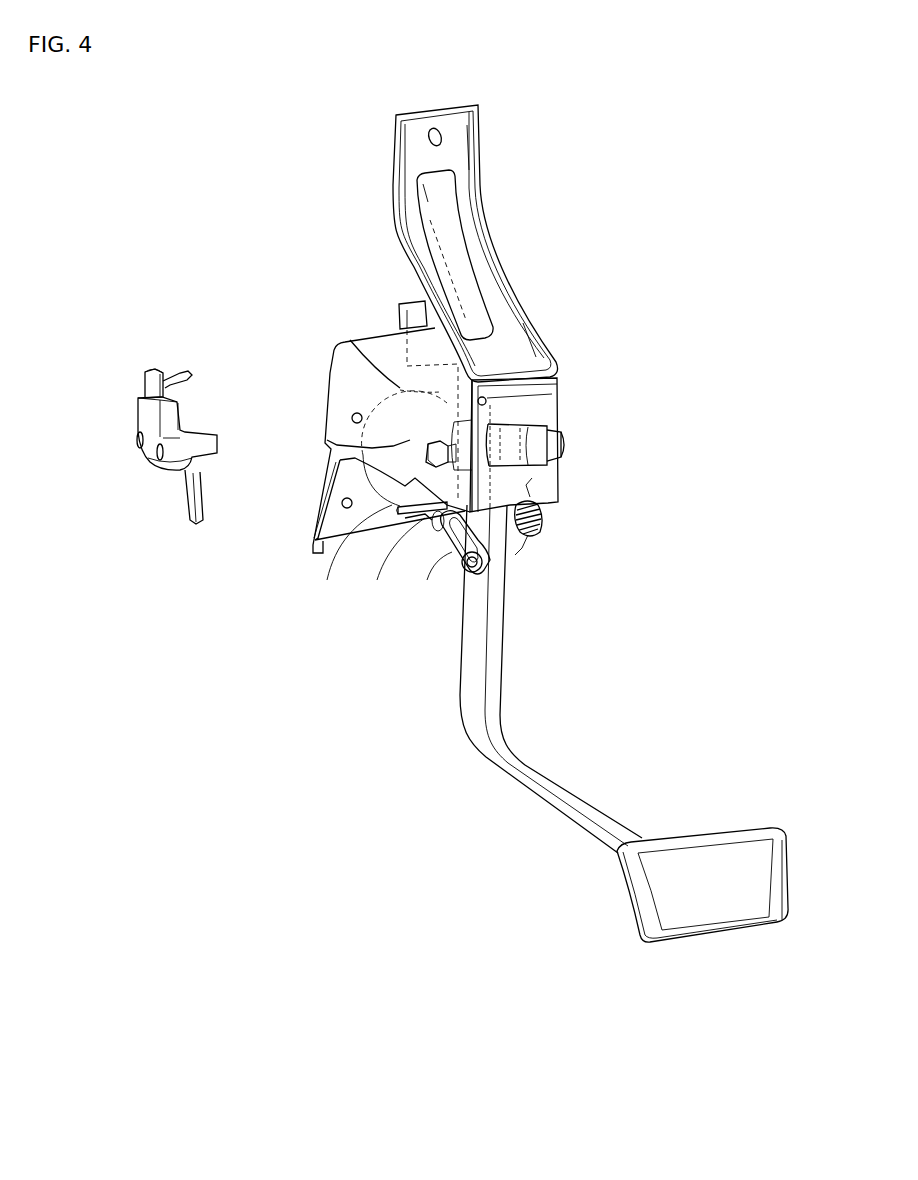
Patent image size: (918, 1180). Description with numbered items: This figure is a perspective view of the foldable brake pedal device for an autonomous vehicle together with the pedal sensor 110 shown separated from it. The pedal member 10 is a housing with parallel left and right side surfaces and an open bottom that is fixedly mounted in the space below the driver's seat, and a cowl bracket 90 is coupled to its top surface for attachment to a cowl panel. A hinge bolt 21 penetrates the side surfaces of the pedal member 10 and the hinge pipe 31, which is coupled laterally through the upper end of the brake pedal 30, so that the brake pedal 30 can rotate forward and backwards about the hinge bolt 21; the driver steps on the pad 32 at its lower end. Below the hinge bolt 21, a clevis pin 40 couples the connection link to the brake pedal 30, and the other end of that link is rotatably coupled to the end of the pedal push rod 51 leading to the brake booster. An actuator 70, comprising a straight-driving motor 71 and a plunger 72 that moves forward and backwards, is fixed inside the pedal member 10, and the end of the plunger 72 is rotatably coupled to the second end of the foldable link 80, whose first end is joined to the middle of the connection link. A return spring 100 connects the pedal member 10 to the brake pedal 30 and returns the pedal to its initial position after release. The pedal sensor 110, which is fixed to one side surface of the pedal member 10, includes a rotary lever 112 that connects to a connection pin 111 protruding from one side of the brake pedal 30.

The pedal member 10 is at (345, 357).
The hinge bolt 21 is at (425, 452).
The brake pedal 30 is at (470, 730).
The hinge pipe 31 is at (562, 446).
The pad 32 is at (728, 914).
The clevis pin 40 is at (470, 568).
The pedal push rod 51 is at (396, 504).
The actuator 70 is at (343, 236).
The straight-driving motor 71 is at (400, 305).
The plunger 72 is at (350, 340).
The foldable link 80 is at (450, 545).
The cowl bracket 90 is at (466, 226).
The return spring 100 is at (540, 523).
The pedal sensor 110 is at (148, 417).
The connection pin 111 is at (414, 520).
The rotary lever 112 is at (188, 503).